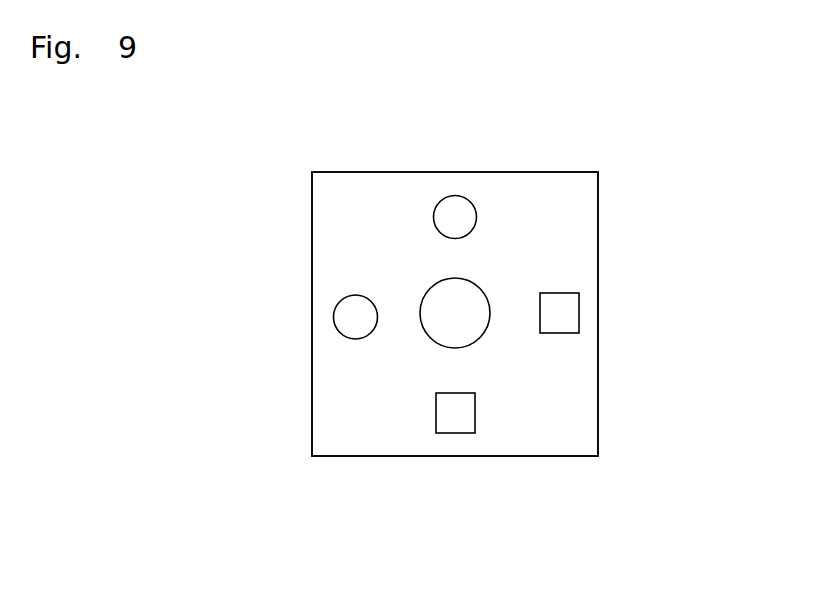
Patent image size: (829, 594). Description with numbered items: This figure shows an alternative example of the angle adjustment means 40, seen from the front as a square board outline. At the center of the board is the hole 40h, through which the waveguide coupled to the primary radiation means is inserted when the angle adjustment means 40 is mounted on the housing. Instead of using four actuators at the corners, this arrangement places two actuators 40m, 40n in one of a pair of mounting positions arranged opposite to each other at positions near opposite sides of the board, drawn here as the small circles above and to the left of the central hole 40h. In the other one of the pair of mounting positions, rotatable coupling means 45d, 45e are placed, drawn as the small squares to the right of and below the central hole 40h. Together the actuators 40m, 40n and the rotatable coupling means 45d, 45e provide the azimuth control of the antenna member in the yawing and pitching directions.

The angle adjustment means 40 is at (598, 173).
The actuator 40m is at (455, 203).
The hole 40h is at (490, 320).
The actuator 40n is at (347, 318).
The rotatable coupling means 45d is at (579, 318).
The rotatable coupling means 45e is at (467, 433).